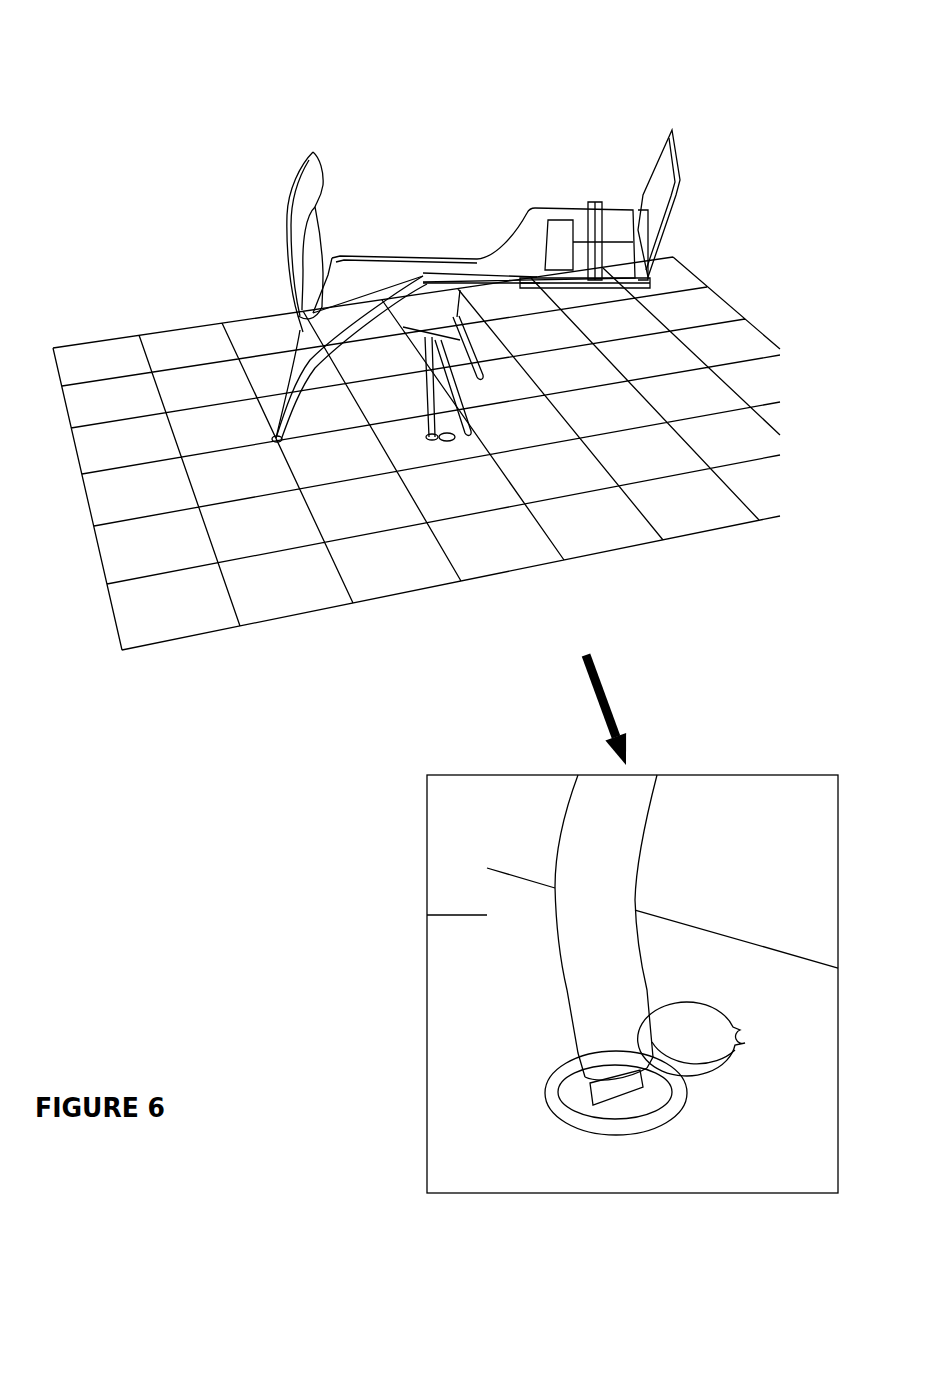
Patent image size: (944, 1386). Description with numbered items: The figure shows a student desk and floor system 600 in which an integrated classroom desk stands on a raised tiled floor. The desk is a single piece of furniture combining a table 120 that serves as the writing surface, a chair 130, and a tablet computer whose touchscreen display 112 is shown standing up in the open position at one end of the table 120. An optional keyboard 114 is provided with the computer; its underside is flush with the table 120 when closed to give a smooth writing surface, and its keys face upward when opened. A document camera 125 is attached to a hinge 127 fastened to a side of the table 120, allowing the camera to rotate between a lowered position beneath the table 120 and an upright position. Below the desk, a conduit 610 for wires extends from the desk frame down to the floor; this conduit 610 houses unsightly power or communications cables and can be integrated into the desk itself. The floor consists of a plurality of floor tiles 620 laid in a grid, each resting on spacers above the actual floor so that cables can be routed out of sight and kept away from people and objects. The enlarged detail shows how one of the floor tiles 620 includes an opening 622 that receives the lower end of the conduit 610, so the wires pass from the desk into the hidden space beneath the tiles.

The student desk and floor system 600 is at (400, 67).
The touchscreen display 112 is at (652, 168).
The keyboard 114 is at (558, 227).
The table 120 is at (522, 265).
The document camera 125 is at (592, 252).
The hinge 127 is at (597, 287).
The chair 130 is at (395, 299).
The conduit 610 is at (422, 395).
The floor tiles 620 is at (533, 435).
The opening 622 is at (625, 1103).